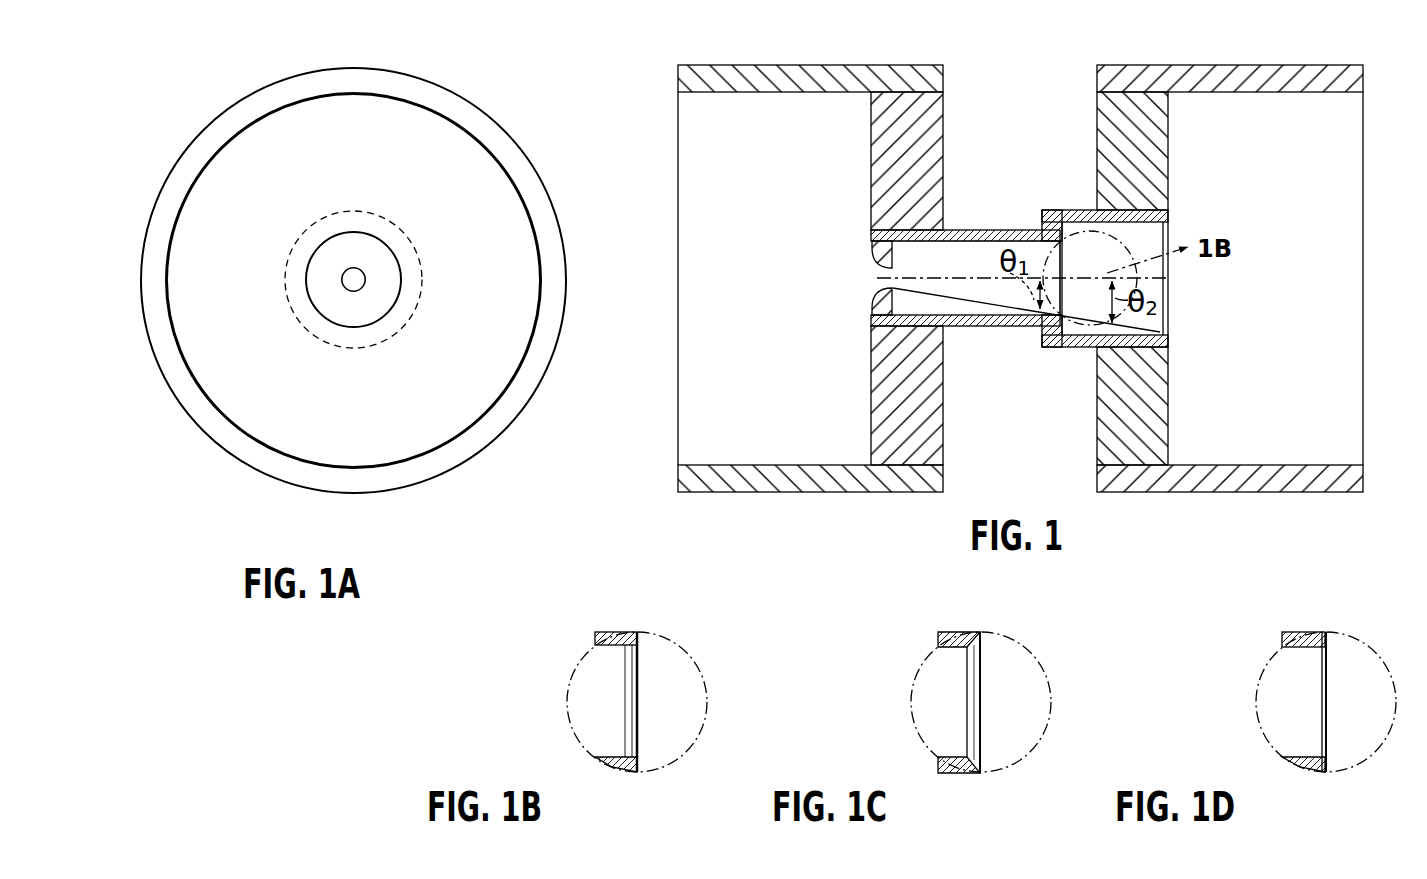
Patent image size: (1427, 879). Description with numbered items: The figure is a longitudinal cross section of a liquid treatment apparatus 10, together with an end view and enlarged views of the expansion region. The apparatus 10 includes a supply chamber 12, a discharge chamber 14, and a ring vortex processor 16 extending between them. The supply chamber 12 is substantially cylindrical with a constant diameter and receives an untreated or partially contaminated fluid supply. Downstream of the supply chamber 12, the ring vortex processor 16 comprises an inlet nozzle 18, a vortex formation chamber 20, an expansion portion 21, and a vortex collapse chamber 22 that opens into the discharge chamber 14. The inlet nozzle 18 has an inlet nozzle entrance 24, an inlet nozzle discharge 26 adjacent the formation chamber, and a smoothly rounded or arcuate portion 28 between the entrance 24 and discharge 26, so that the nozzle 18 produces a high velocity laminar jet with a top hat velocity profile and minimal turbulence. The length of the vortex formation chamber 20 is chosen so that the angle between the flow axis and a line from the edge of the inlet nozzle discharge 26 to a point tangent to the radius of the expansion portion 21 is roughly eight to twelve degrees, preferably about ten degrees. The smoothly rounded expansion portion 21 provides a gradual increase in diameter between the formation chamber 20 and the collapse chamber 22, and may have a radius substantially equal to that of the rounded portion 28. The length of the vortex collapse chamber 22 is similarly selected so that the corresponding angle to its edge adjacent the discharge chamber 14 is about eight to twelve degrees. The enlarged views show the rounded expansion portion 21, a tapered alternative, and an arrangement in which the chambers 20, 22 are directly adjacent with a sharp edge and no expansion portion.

In FIG. 1, the liquid treatment apparatus 10 is at (659, 40).
In FIG. 1A, the liquid treatment apparatus 10 is at (255, 60).
In FIG. 1, the supply chamber 12 is at (762, 64).
In FIG. 1A, the supply chamber 12 is at (336, 494).
In FIG. 1, the discharge chamber 14 is at (1222, 64).
In FIG. 1, the ring vortex processor 16 is at (1067, 205).
In FIG. 1A, the ring vortex processor 16 is at (360, 228).
In FIG. 1B, the ring vortex processor 16 is at (607, 633).
In FIG. 1C, the ring vortex processor 16 is at (951, 633).
In FIG. 1D, the ring vortex processor 16 is at (1296, 633).
In FIG. 1, the inlet nozzle 18 is at (867, 270).
In FIG. 1A, the inlet nozzle 18 is at (338, 276).
In FIG. 1, the vortex formation chamber 20 is at (972, 292).
In FIG. 1B, the vortex formation chamber 20 is at (594, 716).
In FIG. 1C, the vortex formation chamber 20 is at (938, 716).
In FIG. 1D, the vortex formation chamber 20 is at (1283, 716).
In FIG. 1, the expansion portion 21 is at (1060, 269).
In FIG. 1B, the expansion portion 21 is at (631, 674).
In FIG. 1C, the expansion portion 21 is at (976, 674).
In FIG. 1, the vortex collapse chamber 22 is at (1083, 307).
In FIG. 1B, the vortex collapse chamber 22 is at (679, 723).
In FIG. 1C, the vortex collapse chamber 22 is at (1023, 723).
In FIG. 1D, the vortex collapse chamber 22 is at (1368, 723).
In FIG. 1, the inlet nozzle entrance 24 is at (873, 300).
In FIG. 1, the inlet nozzle discharge 26 is at (897, 270).
In FIG. 1, the smoothly rounded or arcuate portion 28 is at (871, 258).